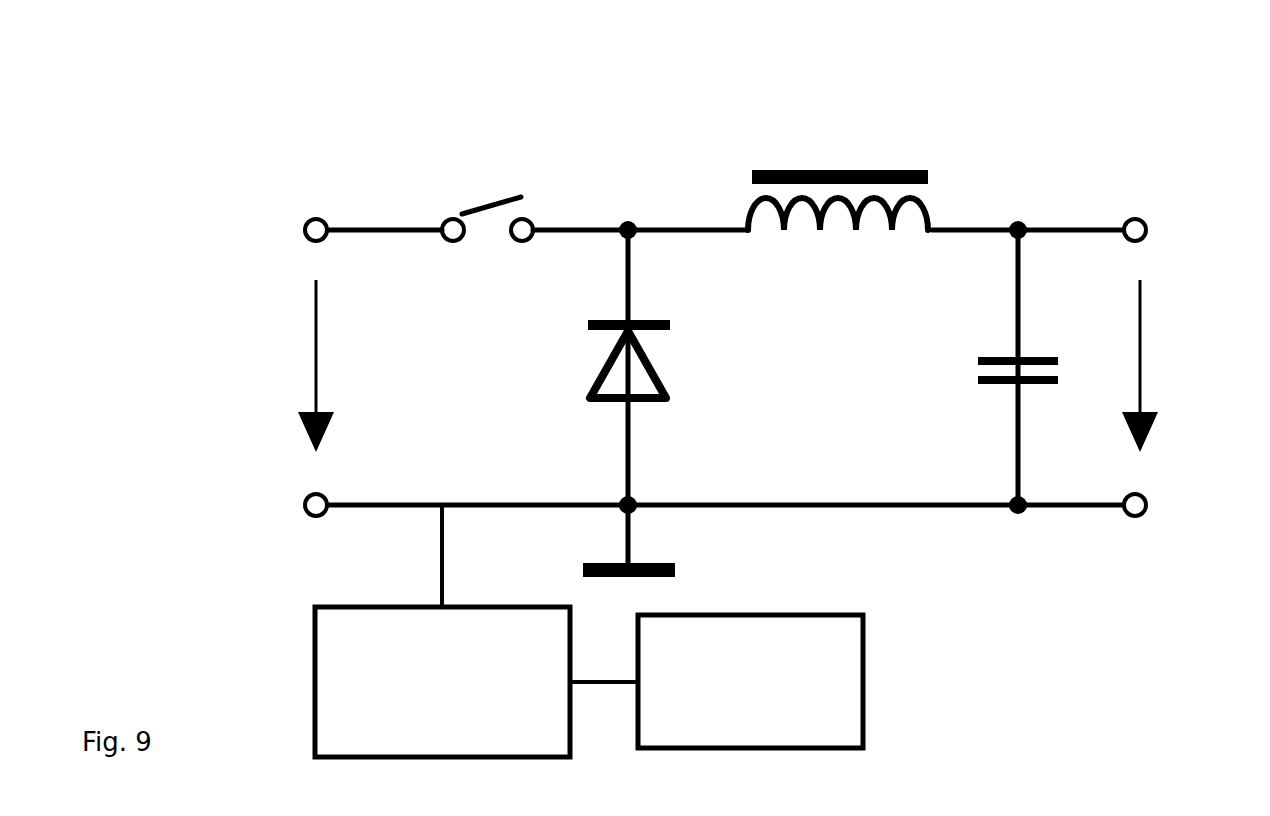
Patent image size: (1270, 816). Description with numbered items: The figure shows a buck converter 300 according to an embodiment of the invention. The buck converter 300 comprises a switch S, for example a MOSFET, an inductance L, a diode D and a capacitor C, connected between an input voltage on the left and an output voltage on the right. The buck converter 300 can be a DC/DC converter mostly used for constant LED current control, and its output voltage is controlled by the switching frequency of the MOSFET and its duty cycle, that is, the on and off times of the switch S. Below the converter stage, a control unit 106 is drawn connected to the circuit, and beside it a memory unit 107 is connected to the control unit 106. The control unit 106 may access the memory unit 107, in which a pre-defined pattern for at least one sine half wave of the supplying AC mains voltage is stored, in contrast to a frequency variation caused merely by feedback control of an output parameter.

The buck converter 300 is at (1162, 135).
The control unit 106 is at (312, 622).
The memory unit 107 is at (865, 682).